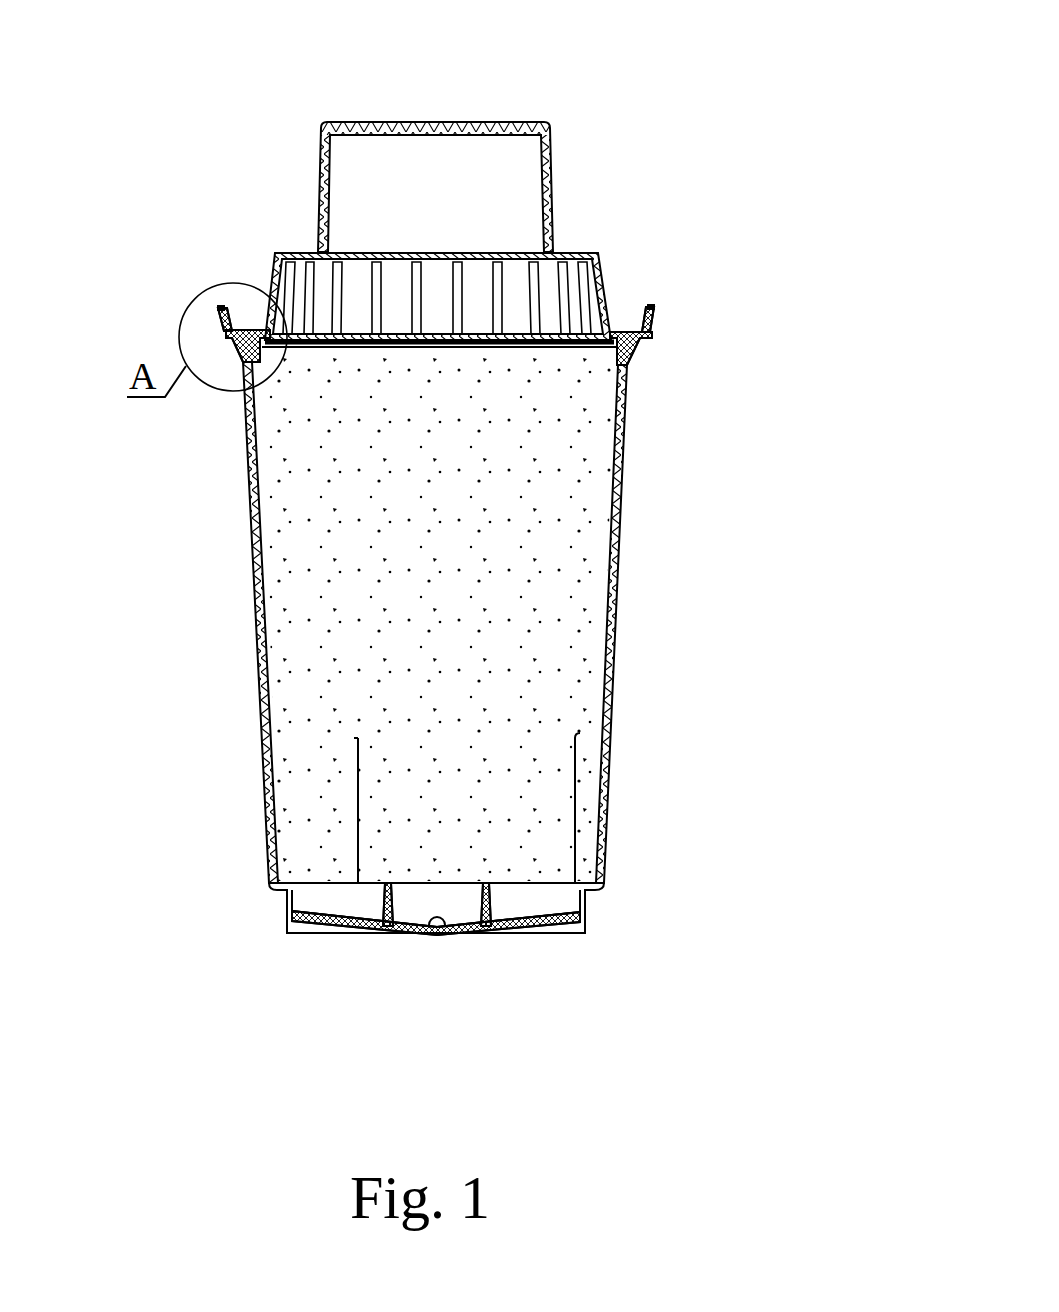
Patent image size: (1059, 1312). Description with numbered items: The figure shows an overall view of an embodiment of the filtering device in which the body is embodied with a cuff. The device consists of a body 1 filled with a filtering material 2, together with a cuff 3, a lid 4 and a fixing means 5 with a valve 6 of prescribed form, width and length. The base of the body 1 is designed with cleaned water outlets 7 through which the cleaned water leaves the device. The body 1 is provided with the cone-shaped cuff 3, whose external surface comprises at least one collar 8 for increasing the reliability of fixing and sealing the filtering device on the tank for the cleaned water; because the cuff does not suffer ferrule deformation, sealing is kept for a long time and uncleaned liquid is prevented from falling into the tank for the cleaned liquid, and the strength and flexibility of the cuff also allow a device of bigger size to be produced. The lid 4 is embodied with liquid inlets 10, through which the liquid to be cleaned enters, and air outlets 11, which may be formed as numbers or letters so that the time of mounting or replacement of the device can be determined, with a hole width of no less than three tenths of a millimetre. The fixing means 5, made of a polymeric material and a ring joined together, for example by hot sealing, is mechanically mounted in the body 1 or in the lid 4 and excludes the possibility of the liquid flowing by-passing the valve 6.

The body 1 is at (622, 525).
The filtering material 2 is at (447, 672).
The cuff 3 is at (653, 315).
The lid 4 is at (568, 252).
The fixing means 5 is at (610, 368).
The valve 6 is at (433, 345).
The cleaned water outlets 7 is at (548, 927).
The collar 8 is at (221, 308).
The liquid inlets 10 is at (305, 302).
The air outlets 11 is at (372, 123).